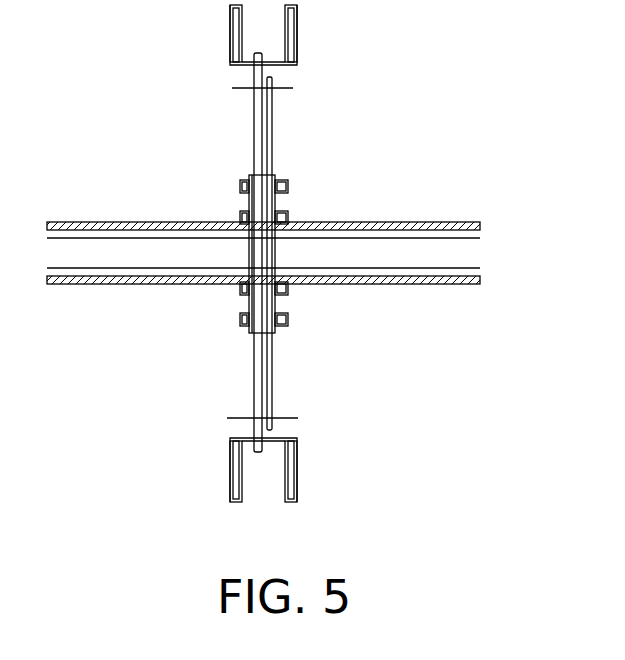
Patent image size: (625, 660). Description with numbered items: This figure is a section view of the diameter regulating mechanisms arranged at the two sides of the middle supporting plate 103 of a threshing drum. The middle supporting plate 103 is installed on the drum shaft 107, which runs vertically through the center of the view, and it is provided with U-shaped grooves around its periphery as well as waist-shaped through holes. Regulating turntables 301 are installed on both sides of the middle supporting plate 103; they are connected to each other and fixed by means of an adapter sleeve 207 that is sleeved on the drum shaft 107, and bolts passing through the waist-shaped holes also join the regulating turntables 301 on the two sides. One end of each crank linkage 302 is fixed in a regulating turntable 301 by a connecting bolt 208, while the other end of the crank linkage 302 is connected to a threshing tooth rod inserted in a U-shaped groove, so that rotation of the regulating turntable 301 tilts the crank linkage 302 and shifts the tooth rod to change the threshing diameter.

The middle supporting plate 103 is at (272, 108).
The drum shaft 107 is at (160, 252).
The adapter sleeve 207 is at (380, 228).
The connecting bolt 208 is at (247, 183).
The regulating turntable 301 is at (245, 262).
The crank linkage 302 is at (253, 125).